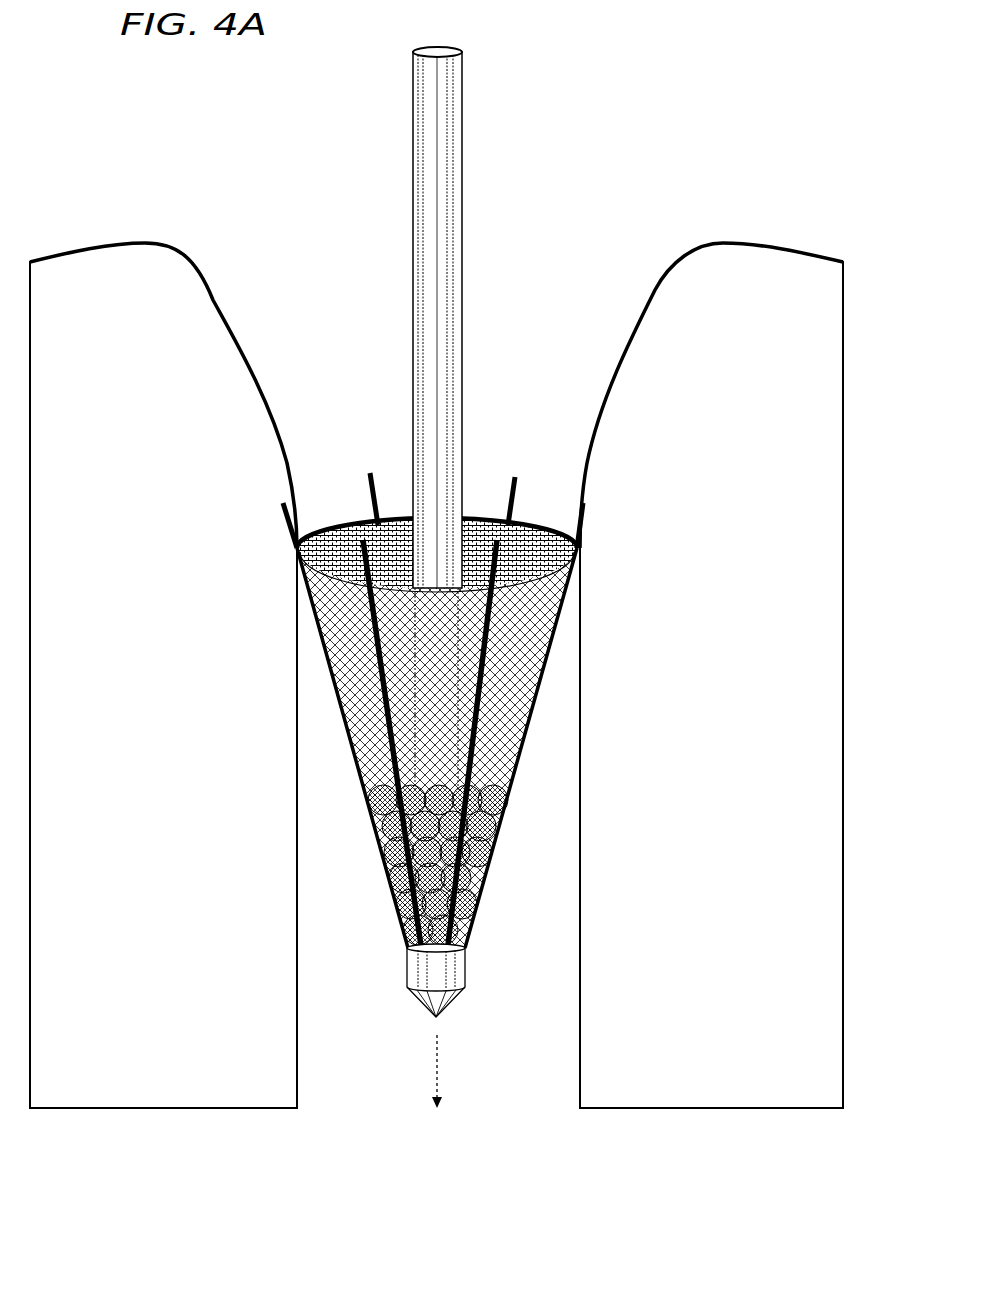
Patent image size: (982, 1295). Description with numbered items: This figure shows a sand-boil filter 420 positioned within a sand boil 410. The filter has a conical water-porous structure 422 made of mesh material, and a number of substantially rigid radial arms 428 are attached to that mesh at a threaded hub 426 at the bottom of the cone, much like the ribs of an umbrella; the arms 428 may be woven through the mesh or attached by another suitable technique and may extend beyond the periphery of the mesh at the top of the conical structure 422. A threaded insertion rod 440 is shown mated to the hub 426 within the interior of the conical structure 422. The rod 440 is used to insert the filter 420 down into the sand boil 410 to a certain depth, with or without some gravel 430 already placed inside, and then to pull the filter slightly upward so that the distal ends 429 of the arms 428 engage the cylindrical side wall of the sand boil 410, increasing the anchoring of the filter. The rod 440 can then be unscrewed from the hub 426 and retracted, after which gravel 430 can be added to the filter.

The sand boil 410 is at (298, 266).
The sand-boil filter 420 is at (440, 500).
The water-porous structure 422 is at (535, 611).
The threaded hub 426 is at (466, 968).
The radial arms 428 is at (548, 653).
The distal ends 429 is at (283, 505).
The gravel 430 is at (497, 840).
The insertion rod 440 is at (462, 143).